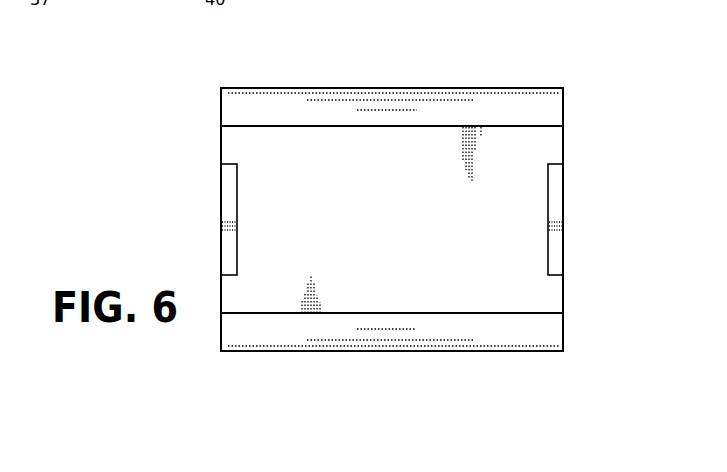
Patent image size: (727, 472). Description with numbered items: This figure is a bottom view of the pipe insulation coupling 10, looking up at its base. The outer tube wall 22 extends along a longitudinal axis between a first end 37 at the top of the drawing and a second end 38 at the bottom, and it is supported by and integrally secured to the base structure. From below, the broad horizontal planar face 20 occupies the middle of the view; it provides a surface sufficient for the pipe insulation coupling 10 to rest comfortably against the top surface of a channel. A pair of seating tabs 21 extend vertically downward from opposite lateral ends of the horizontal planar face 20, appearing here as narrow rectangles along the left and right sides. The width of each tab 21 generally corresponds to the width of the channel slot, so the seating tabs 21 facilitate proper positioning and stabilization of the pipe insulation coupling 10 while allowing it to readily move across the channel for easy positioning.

The pipe insulation coupling 10 is at (178, 237).
The horizontal planar face 20 is at (505, 292).
The seating tabs 21 is at (229, 203).
The outer tube wall 22 is at (552, 109).
The first end 37 is at (326, 88).
The second end 38 is at (325, 352).